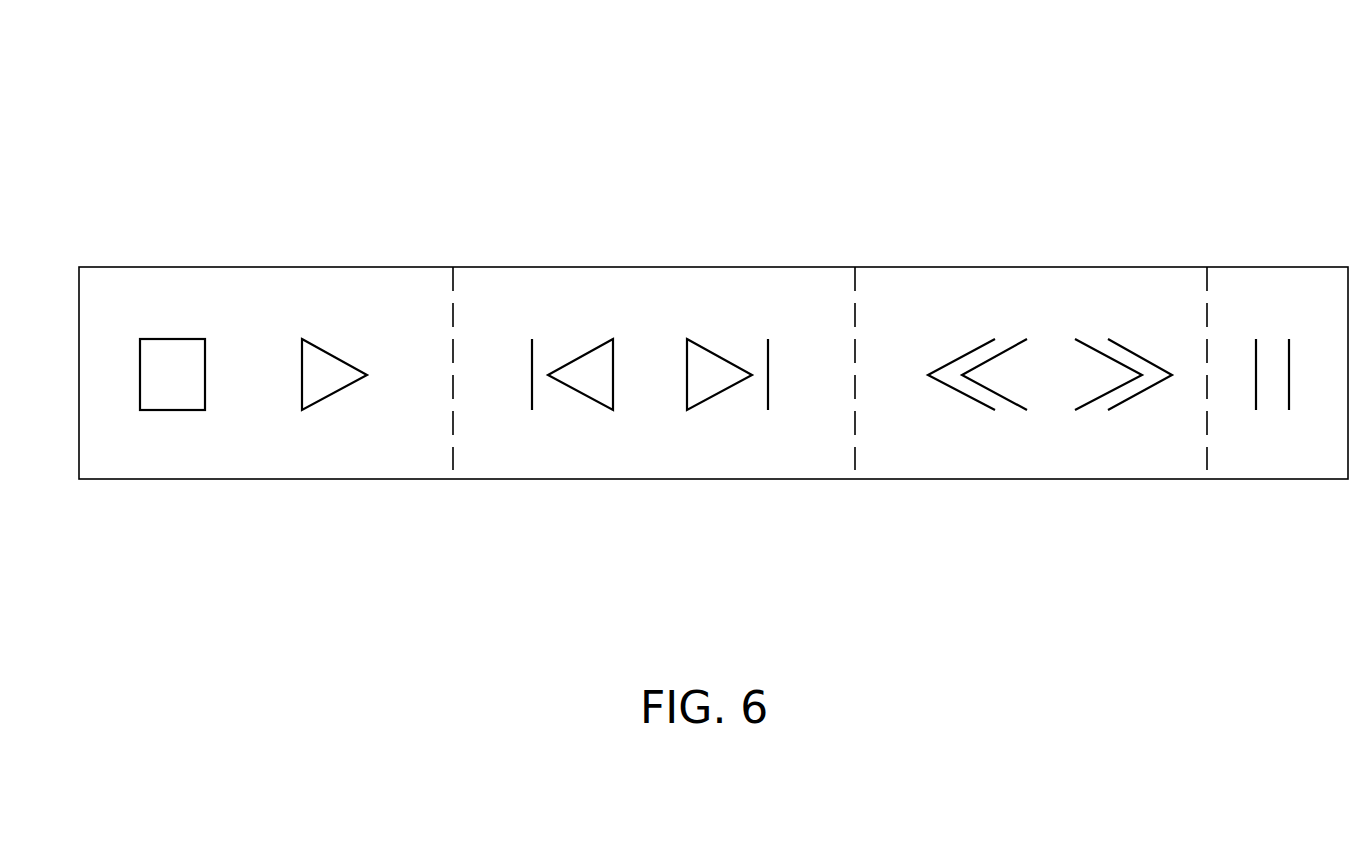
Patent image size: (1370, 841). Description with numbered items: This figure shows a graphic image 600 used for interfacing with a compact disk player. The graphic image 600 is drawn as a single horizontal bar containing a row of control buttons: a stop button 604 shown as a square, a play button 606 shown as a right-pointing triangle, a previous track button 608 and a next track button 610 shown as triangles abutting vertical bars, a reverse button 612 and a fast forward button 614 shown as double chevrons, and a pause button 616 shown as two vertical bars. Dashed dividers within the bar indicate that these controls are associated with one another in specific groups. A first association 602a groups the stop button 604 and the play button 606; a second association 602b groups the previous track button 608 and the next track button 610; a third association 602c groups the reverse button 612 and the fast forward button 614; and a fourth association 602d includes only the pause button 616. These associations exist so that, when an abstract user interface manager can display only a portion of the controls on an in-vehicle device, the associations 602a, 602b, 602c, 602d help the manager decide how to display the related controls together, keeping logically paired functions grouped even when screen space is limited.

The graphic image 600 is at (1110, 106).
The first association 602a is at (252, 266).
The second association 602b is at (582, 266).
The third association 602c is at (948, 266).
The fourth association 602d is at (1283, 266).
The stop button 604 is at (192, 424).
The play button 606 is at (320, 408).
The previous track button 608 is at (603, 425).
The next track button 610 is at (689, 425).
The reverse button 612 is at (987, 427).
The fast forward button 614 is at (1093, 427).
The pause button 616 is at (1265, 427).